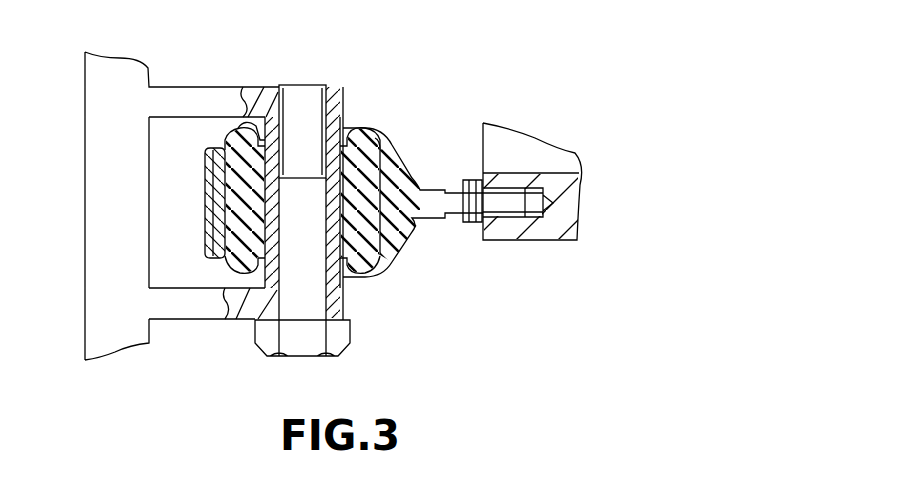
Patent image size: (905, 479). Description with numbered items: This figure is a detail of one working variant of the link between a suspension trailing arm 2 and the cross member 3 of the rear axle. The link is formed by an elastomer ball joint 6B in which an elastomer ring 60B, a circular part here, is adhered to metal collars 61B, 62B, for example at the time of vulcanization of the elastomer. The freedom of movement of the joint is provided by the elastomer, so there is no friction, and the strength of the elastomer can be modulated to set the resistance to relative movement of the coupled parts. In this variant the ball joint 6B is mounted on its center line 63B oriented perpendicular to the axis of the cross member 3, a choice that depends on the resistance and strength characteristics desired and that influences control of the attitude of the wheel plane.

The suspension trailing arm 2 is at (97, 317).
The cross member 3 is at (567, 157).
The ball joint 6B is at (413, 347).
The elastomer ring 60B is at (395, 160).
The metal collar 61B is at (236, 136).
The metal collar 62B is at (333, 127).
The center line 63B is at (313, 260).